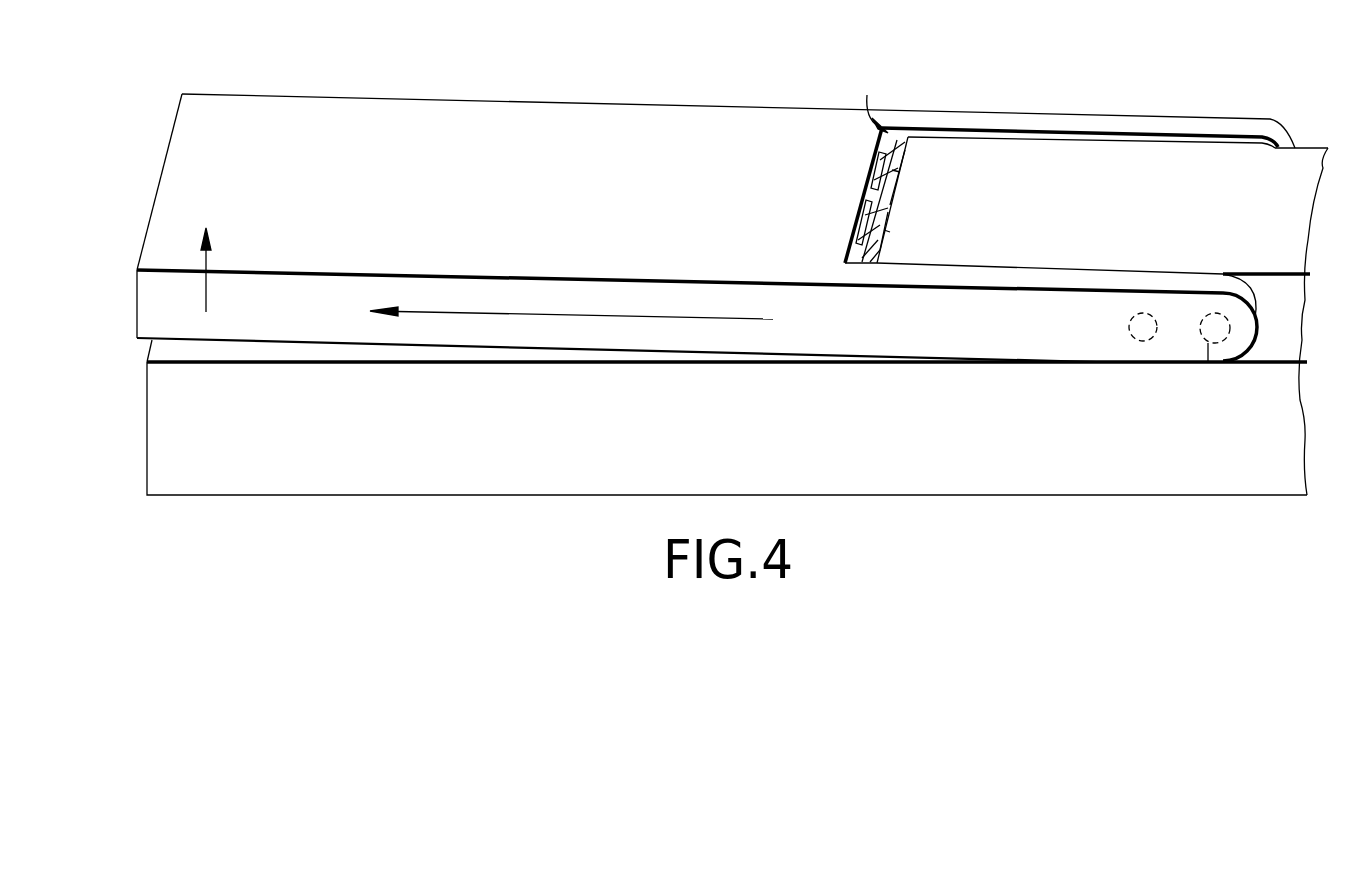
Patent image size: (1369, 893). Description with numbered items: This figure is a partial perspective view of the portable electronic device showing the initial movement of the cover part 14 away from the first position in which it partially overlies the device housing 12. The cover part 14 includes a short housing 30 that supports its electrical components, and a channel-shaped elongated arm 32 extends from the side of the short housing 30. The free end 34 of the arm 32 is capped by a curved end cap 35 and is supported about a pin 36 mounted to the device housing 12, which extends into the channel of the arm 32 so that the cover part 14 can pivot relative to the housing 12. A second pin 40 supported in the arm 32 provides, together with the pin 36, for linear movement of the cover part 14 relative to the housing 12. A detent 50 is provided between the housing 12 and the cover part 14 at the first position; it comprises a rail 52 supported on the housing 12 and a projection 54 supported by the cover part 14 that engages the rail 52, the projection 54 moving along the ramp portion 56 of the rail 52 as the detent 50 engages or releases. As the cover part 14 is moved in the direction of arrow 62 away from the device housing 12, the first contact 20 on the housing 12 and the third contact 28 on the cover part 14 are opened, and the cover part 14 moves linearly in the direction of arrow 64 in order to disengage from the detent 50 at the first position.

The device housing 12 is at (192, 487).
The cover part 14 is at (420, 105).
The first contact 20 is at (887, 213).
The third contact 28 is at (863, 212).
The short housing 30 is at (298, 158).
The elongated arm 32 is at (1013, 355).
The free end 34 is at (1208, 355).
The curved end cap 35 is at (1255, 320).
The pin 36 is at (1203, 328).
The second pin 40 is at (1130, 325).
The detent 50 is at (865, 98).
The rail 52 is at (893, 170).
The projection 54 is at (877, 175).
The ramp portion 56 is at (890, 137).
The arrow 62 is at (205, 298).
The arrow 64 is at (773, 319).